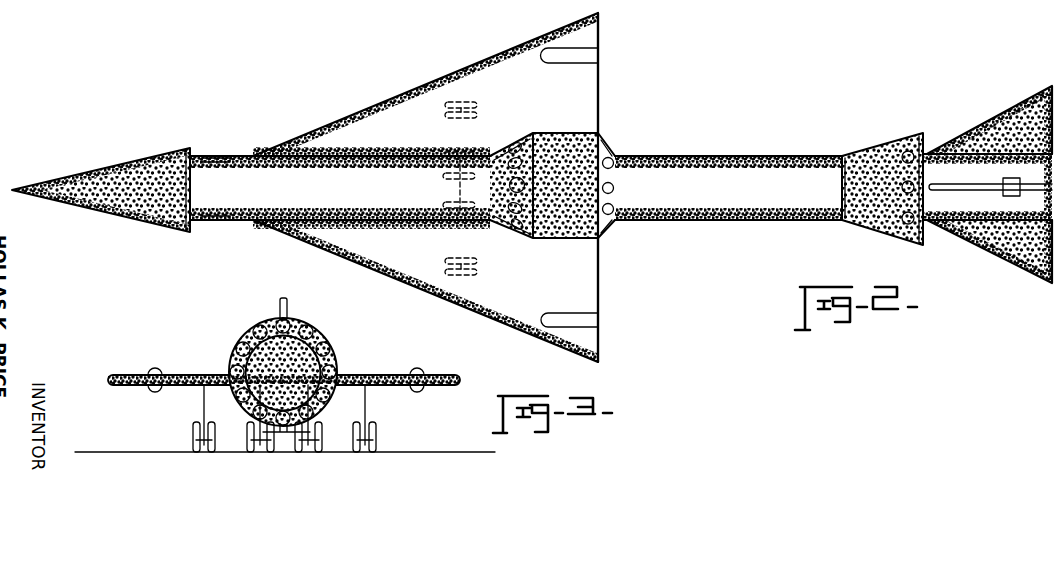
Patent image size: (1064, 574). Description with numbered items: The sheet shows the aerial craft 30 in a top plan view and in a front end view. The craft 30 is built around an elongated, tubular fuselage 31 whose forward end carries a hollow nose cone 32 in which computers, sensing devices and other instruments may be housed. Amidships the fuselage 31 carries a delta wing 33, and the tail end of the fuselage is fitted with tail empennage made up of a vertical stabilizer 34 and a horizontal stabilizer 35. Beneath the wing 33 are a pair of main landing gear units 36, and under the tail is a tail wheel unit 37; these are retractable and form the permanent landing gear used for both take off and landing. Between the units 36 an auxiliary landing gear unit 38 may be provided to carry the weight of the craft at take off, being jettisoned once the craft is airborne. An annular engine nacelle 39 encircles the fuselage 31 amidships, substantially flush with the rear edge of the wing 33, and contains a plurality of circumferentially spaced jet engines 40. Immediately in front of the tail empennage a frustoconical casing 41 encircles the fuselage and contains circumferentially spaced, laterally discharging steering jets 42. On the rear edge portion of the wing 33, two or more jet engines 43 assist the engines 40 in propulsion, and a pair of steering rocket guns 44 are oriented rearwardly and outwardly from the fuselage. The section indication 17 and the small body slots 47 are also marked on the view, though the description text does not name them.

In FIG. 2, the section line 17 is at (536, 180).
In FIG. 2, the craft 30 is at (692, 51).
In FIG. 3, the craft 30 is at (246, 318).
In FIG. 2, the tubular fuselage 31 is at (681, 155).
In FIG. 2, the hollow nose cone 32 is at (106, 168).
In FIG. 3, the hollow nose cone 32 is at (295, 356).
In FIG. 2, the delta wing 33 is at (380, 101).
In FIG. 3, the delta wing 33 is at (380, 375).
In FIG. 2, the vertical stabilizer 34 is at (962, 182).
In FIG. 3, the vertical stabilizer 34 is at (280, 312).
In FIG. 2, the horizontal stabilizer 35 is at (1008, 120).
In FIG. 2, the main landing gear units 36 is at (465, 98).
In FIG. 3, the main landing gear units 36 is at (190, 435).
In FIG. 2, the tail wheel unit 37 is at (1003, 205).
In FIG. 2, the auxiliary landing gear unit 38 is at (440, 202).
In FIG. 3, the auxiliary landing gear unit 38 is at (302, 443).
In FIG. 2, the annular engine nacelle 39 is at (612, 153).
In FIG. 3, the annular engine nacelle 39 is at (332, 348).
In FIG. 2, the jet engines 40 is at (615, 220).
In FIG. 3, the jet engines 40 is at (241, 357).
In FIG. 2, the frustoconical casing 41 is at (871, 150).
In FIG. 2, the steering jets 42 is at (904, 162).
In FIG. 2, the jet engines 43 is at (555, 47).
In FIG. 3, the jet engines 43 is at (155, 373).
In FIG. 2, the steering rocket guns 44 is at (600, 14).
In FIG. 2, the body slots 47 is at (218, 156).